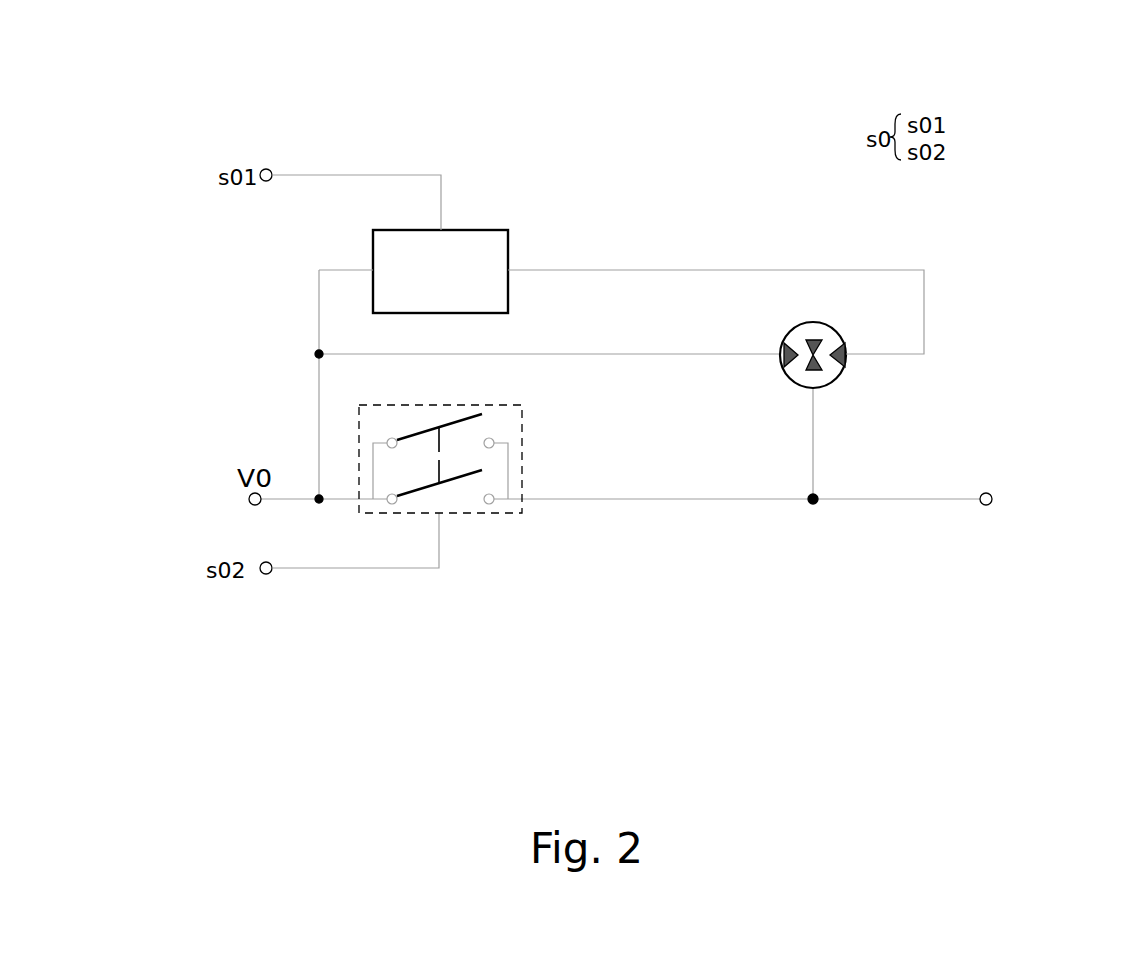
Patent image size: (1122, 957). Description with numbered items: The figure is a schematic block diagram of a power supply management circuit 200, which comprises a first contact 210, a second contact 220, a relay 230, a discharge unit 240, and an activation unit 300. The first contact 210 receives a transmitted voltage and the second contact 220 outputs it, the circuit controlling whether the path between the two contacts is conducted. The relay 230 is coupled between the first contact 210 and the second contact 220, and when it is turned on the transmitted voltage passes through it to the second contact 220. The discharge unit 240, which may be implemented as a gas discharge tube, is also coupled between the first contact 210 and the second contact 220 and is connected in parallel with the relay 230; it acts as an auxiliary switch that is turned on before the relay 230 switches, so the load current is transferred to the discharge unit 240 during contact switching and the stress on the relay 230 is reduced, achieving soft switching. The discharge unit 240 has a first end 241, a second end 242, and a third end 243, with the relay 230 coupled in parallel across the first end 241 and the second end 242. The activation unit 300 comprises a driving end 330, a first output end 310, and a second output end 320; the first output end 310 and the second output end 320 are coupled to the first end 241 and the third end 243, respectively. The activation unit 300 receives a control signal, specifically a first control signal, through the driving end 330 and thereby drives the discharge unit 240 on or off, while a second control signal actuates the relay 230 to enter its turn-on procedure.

The power supply management circuit 200 is at (180, 85).
The first contact 210 is at (247, 499).
The second contact 220 is at (993, 500).
The relay 230 is at (523, 421).
The discharge unit 240 is at (802, 381).
The first end 241 is at (778, 357).
The second end 242 is at (816, 392).
The third end 243 is at (850, 357).
The activation unit 300 is at (598, 257).
The first output end 310 is at (370, 265).
The second output end 320 is at (512, 262).
The driving end 330 is at (447, 229).